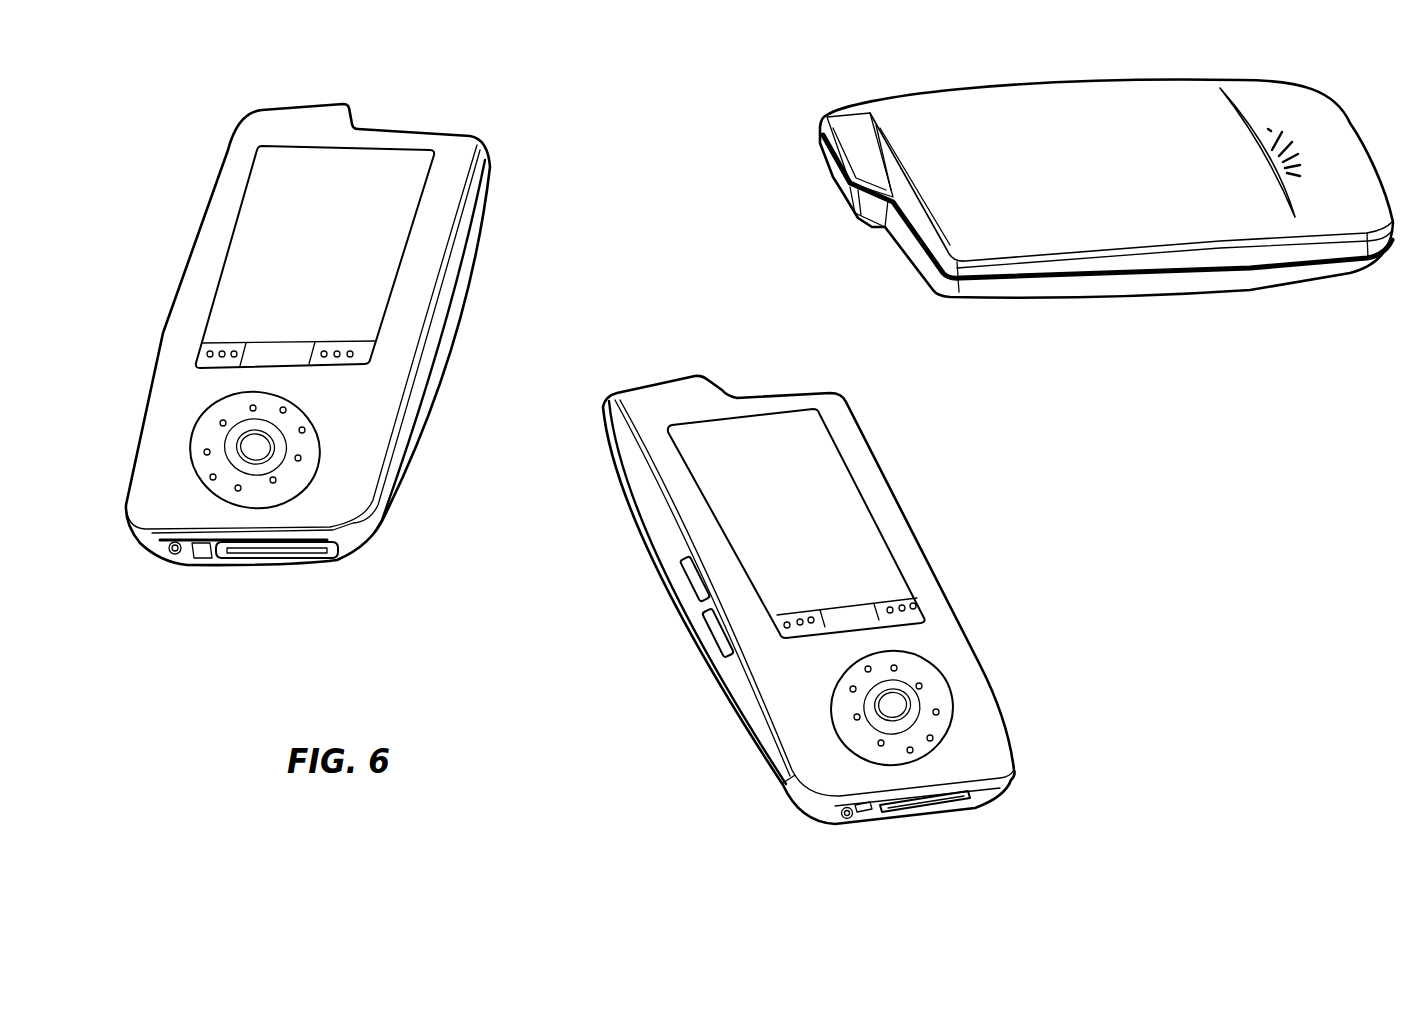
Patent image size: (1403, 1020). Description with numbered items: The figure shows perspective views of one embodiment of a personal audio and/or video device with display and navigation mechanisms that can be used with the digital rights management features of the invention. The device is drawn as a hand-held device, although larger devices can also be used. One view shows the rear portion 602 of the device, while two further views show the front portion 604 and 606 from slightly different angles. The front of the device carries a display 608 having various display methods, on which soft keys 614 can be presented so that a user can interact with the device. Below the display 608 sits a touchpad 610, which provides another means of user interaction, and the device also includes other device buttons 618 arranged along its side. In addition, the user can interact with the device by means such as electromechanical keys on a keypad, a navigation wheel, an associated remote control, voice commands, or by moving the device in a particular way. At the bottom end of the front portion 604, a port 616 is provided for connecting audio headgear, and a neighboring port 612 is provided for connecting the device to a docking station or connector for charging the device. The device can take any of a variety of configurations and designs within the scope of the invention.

The rear portion 602 is at (1177, 293).
The front portion 604 is at (805, 625).
The front portion 606 is at (460, 310).
The display 608 is at (747, 510).
The touchpad 610 is at (847, 708).
The port 612 is at (937, 813).
The soft keys 614 is at (925, 603).
The port 616 is at (848, 822).
The device buttons 618 is at (712, 631).